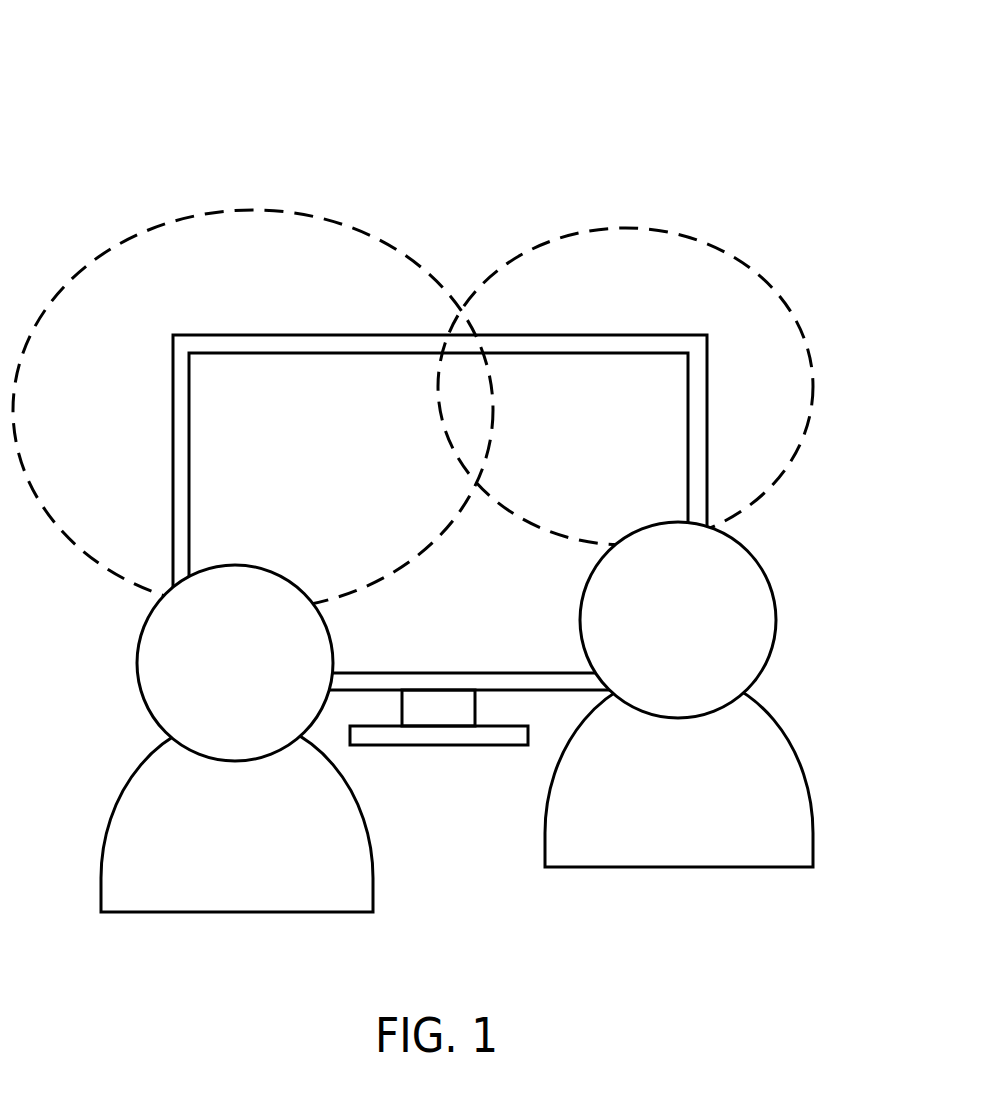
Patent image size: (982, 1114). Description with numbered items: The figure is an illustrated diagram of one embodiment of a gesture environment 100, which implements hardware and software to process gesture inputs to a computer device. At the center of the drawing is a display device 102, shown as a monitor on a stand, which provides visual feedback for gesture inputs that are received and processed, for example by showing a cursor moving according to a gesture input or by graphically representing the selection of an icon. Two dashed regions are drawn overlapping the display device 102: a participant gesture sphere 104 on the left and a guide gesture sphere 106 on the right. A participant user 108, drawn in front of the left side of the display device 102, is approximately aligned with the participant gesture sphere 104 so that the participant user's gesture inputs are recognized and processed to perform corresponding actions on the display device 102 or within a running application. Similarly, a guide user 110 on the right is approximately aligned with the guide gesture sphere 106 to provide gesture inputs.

The gesture environment 100 is at (220, 60).
The display device 102 is at (173, 440).
The participant gesture sphere 104 is at (148, 228).
The guide gesture sphere 106 is at (528, 250).
The participant user 108 is at (133, 783).
The guide user 110 is at (780, 732).